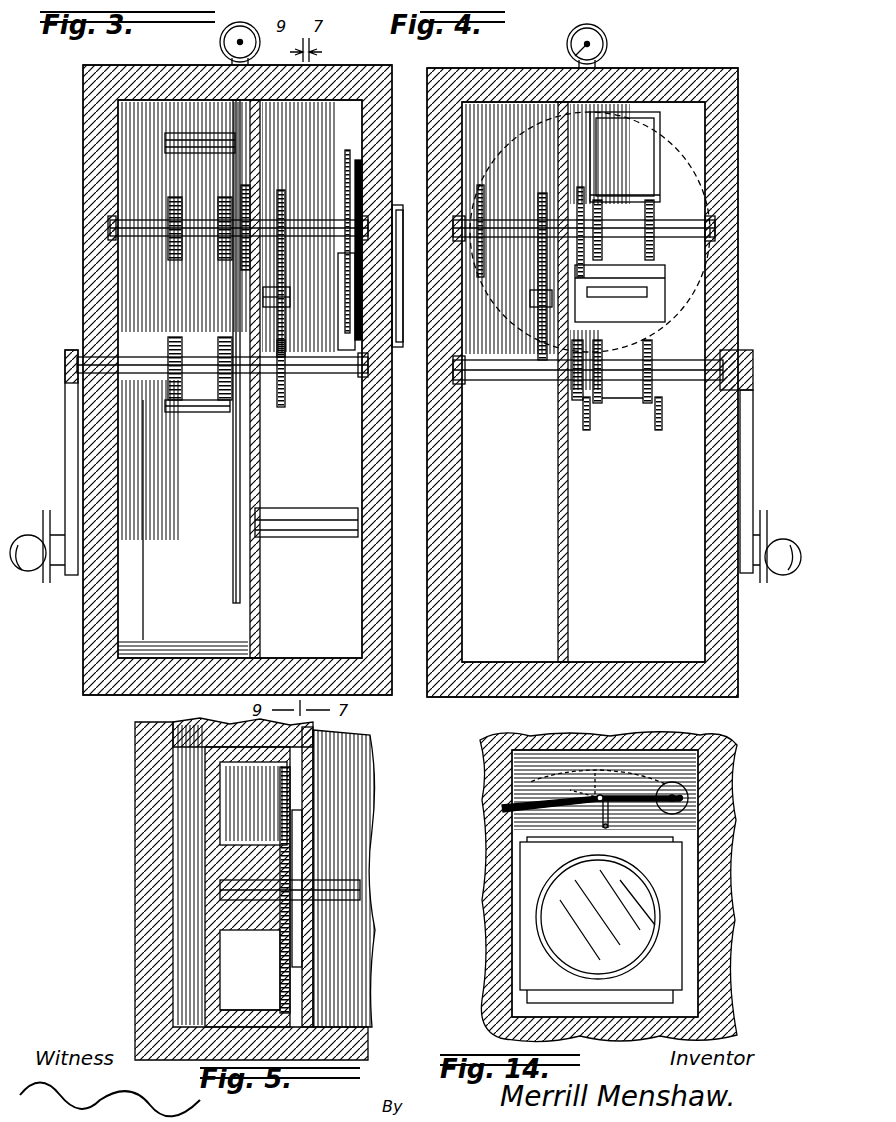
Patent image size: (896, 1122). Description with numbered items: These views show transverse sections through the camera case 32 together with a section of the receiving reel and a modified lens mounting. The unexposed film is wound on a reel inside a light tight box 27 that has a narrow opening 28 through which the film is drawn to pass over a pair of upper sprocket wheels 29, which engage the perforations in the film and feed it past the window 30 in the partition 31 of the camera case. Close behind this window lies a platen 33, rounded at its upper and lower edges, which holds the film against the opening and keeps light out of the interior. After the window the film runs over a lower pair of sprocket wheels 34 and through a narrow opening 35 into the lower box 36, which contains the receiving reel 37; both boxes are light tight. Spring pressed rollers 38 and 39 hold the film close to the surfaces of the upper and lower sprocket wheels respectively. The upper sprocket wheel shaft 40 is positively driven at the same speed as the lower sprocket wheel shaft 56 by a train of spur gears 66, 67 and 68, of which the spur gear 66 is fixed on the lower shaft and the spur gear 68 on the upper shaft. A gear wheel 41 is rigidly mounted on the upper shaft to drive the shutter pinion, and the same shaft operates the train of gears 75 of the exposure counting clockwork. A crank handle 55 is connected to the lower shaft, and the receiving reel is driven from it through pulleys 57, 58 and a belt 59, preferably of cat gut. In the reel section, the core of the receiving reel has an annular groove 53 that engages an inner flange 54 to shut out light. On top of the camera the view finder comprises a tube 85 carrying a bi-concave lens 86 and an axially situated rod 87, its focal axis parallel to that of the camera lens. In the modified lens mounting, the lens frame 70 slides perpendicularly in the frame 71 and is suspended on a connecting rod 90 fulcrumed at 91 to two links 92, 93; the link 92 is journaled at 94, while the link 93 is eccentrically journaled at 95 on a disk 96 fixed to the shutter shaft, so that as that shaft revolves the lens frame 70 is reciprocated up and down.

In FIG. 3, the light tight box 27 is at (155, 287).
In FIG. 3, the narrow opening 28 is at (216, 152).
In FIG. 3, the sprocket wheels 29 is at (220, 242).
In FIG. 4, the sprocket wheels 29 is at (656, 225).
In FIG. 4, the window 30 is at (640, 285).
In FIG. 4, the partition 31 is at (668, 613).
In FIG. 3, the camera case 32 is at (348, 80).
In FIG. 4, the camera case 32 is at (668, 80).
In FIG. 4, the platen 33 is at (652, 310).
In FIG. 3, the sprocket wheels 34 is at (220, 340).
In FIG. 4, the sprocket wheels 34 is at (640, 352).
In FIG. 3, the narrow opening 35 is at (218, 412).
In FIG. 3, the lower box 36 is at (155, 540).
In FIG. 5, the lower box 36 is at (253, 1022).
In FIG. 5, the receiving reel 37 is at (243, 917).
In FIG. 4, the spring pressed rollers 38 is at (598, 182).
In FIG. 4, the spring pressed rollers 39 is at (655, 418).
In FIG. 3, the upper sprocket wheel shaft 40 is at (195, 228).
In FIG. 4, the upper sprocket wheel shaft 40 is at (676, 233).
In FIG. 3, the gear wheel 41 is at (243, 272).
In FIG. 4, the gear wheel 41 is at (583, 270).
In FIG. 5, the annular groove 53 is at (280, 940).
In FIG. 5, the inner flange 54 is at (282, 860).
In FIG. 3, the crank handle 55 is at (28, 538).
In FIG. 4, the crank handle 55 is at (783, 538).
In FIG. 3, the lower sprocket wheel shaft 56 is at (195, 357).
In FIG. 4, the lower sprocket wheel shaft 56 is at (515, 375).
In FIG. 4, the pulley 57 is at (568, 392).
In FIG. 5, the pulley 58 is at (297, 833).
In FIG. 3, the belt 59 is at (240, 485).
In FIG. 3, the spur gear 66 is at (285, 396).
In FIG. 4, the spur gear 66 is at (538, 343).
In FIG. 3, the spur gear 67 is at (286, 324).
In FIG. 4, the spur gear 67 is at (538, 310).
In FIG. 3, the spur gear 68 is at (285, 245).
In FIG. 4, the spur gear 68 is at (540, 245).
In FIG. 14, the lens frame 70 is at (528, 836).
In FIG. 14, the frame 71 is at (527, 872).
In FIG. 3, the train of gears 75 is at (358, 345).
In FIG. 3, the tube 85 is at (250, 30).
In FIG. 4, the tube 85 is at (604, 33).
In FIG. 4, the bi-concave lens 86 is at (582, 47).
In FIG. 3, the rod 87 is at (237, 45).
In FIG. 4, the rod 87 is at (592, 44).
In FIG. 14, the connecting rod 90 is at (610, 820).
In FIG. 14, the fulcrum 91 is at (598, 802).
In FIG. 14, the link 92 is at (595, 800).
In FIG. 14, the link 93 is at (611, 772).
In FIG. 14, the journal 94 is at (502, 808).
In FIG. 14, the eccentric journal 95 is at (690, 800).
In FIG. 14, the disk 96 is at (682, 792).